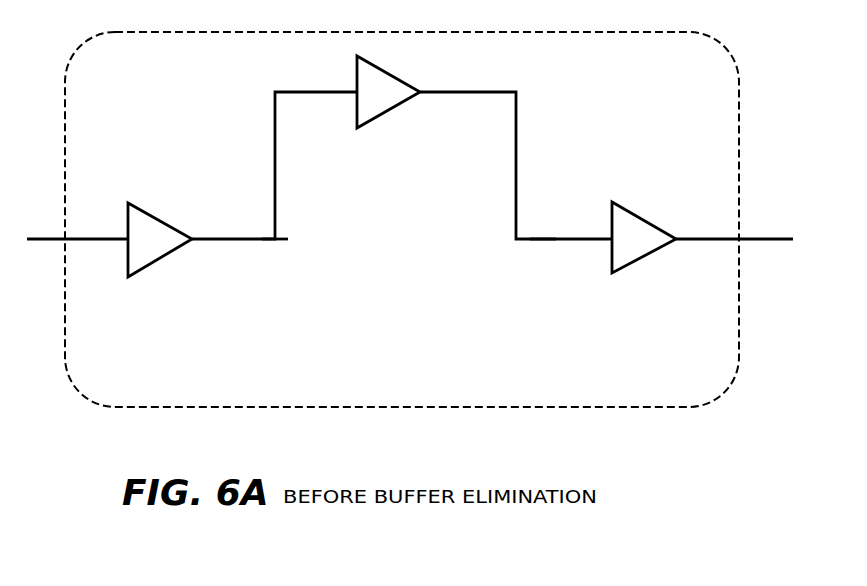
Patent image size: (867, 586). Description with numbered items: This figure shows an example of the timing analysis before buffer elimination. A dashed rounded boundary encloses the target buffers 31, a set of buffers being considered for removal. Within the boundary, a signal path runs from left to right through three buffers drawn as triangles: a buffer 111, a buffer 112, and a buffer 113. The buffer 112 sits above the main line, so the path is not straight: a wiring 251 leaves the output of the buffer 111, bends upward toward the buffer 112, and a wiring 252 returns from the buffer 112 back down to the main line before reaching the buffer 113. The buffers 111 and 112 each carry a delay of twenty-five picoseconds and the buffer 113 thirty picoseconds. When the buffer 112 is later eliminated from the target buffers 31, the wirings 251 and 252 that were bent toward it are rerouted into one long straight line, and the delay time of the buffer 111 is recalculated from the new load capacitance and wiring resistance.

The target buffers 31 is at (620, 408).
The buffer 111 is at (151, 264).
The buffer 112 is at (392, 115).
The buffer 113 is at (636, 262).
The wiring 251 is at (266, 241).
The wiring 252 is at (543, 241).